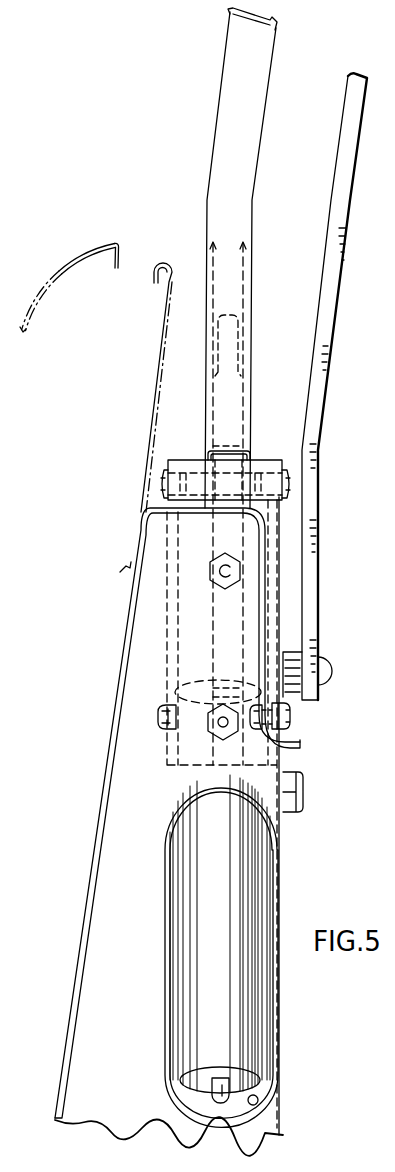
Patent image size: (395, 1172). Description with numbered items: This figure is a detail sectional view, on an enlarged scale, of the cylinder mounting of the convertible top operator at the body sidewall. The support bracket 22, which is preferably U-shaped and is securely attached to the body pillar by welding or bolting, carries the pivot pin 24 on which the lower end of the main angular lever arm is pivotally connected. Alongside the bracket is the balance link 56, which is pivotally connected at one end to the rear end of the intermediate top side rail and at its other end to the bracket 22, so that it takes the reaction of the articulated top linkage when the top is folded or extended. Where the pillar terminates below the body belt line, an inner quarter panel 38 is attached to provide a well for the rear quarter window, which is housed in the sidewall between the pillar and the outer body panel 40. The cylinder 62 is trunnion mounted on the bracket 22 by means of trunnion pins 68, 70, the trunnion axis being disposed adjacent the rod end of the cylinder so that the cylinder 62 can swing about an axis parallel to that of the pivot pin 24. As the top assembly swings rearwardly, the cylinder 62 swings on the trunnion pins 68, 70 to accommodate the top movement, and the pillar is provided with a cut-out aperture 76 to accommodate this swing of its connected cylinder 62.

The support bracket 22 is at (207, 200).
The pivot pin 24 is at (291, 470).
The inner quarter panel 38 is at (167, 306).
The outer body panel 40 is at (68, 262).
The balance link 56 is at (330, 327).
The cylinder 62 is at (238, 964).
The trunnion pin 68 is at (291, 725).
The trunnion pin 70 is at (157, 722).
The cut-out aperture 76 is at (257, 1104).